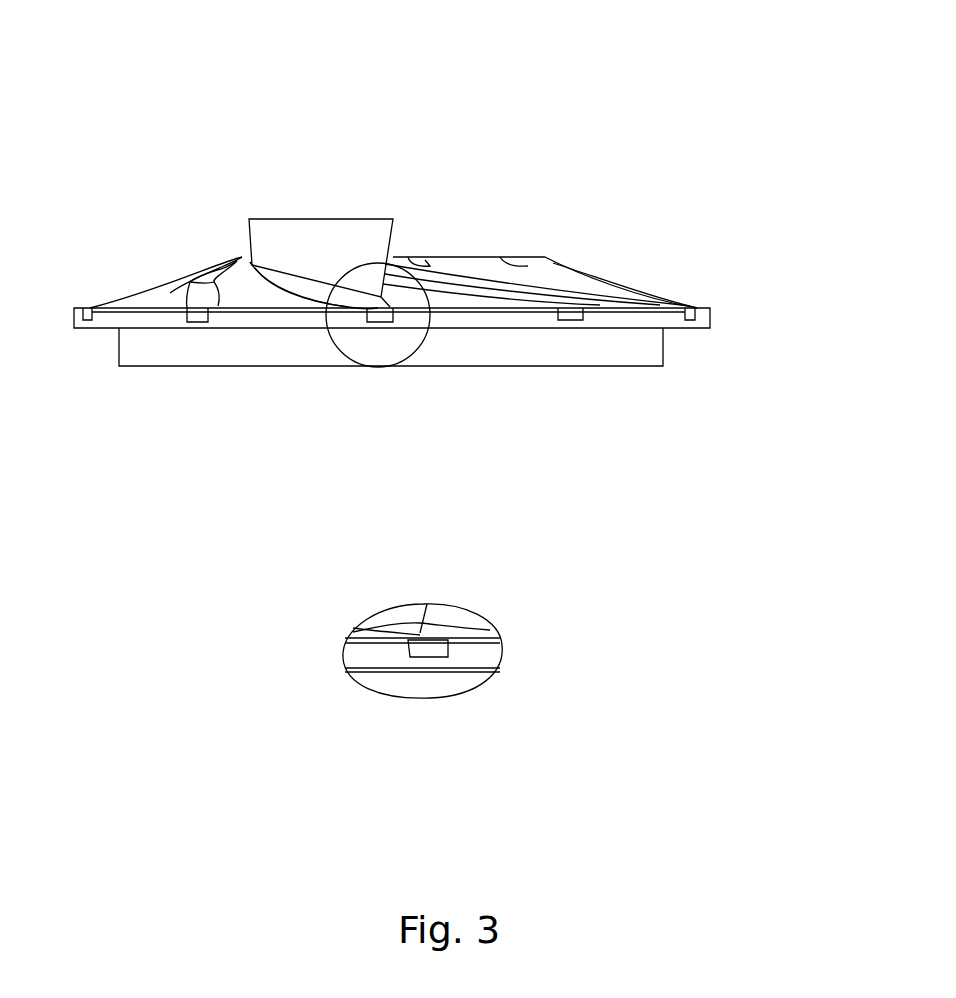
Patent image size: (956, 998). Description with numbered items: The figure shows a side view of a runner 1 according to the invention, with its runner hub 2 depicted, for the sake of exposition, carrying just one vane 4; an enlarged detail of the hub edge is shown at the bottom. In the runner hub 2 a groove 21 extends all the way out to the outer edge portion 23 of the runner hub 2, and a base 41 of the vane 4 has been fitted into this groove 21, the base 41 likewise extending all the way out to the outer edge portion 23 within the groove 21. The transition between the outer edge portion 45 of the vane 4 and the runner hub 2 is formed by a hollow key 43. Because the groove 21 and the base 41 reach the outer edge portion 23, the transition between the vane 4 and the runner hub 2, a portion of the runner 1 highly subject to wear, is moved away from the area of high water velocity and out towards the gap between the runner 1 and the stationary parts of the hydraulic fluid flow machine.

The runner 1 is at (373, 152).
The runner hub 2 is at (243, 292).
The groove 21 is at (202, 303).
The vane 4 is at (302, 258).
The outer edge portion 23 is at (349, 320).
The base 41 is at (382, 317).
The hollow key 43 is at (497, 660).
The outer edge portion 45 is at (383, 298).